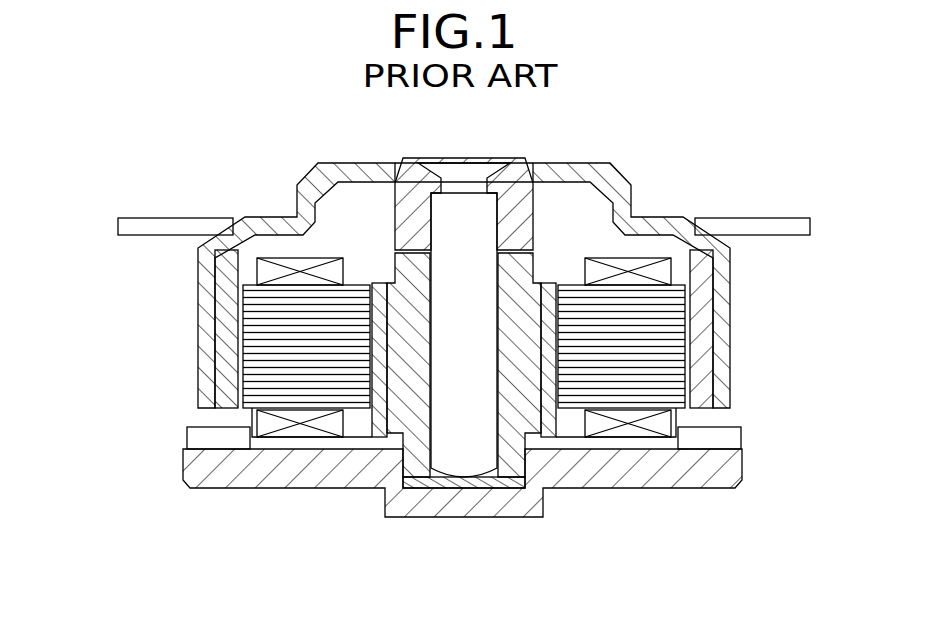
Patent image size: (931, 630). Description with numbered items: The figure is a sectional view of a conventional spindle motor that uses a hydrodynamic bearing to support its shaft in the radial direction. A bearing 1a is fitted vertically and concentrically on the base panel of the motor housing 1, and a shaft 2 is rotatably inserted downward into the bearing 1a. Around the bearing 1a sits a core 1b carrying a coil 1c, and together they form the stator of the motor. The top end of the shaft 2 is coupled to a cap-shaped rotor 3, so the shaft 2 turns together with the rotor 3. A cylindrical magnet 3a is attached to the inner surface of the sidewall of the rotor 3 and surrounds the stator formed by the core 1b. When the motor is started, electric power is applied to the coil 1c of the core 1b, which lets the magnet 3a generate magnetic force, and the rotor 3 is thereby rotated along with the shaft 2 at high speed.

The motor housing 1 is at (258, 494).
The bearing 1a is at (395, 400).
The core 1b is at (293, 362).
The coil 1c is at (268, 272).
The shaft 2 is at (448, 455).
The rotor 3 is at (265, 228).
The magnet 3a is at (225, 322).